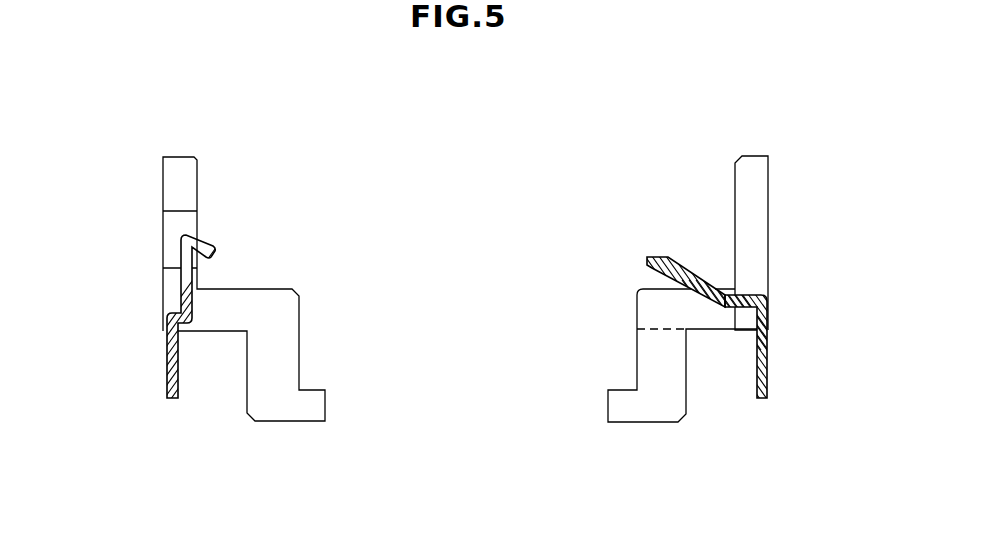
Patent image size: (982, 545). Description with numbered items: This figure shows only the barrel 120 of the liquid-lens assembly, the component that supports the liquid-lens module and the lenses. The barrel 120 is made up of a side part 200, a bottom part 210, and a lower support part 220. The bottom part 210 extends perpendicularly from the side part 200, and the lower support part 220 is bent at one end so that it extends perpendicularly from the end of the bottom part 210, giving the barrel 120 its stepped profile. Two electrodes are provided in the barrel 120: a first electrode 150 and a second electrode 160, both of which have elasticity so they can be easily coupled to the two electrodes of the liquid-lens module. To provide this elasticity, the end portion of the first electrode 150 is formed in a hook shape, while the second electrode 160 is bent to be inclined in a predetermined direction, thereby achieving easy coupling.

The barrel 120 is at (176, 96).
The first electrode 150 is at (167, 358).
The side part 200 is at (755, 227).
The bottom part 210 is at (647, 310).
The lower support part 220 is at (633, 408).
The second electrode 160 is at (762, 355).